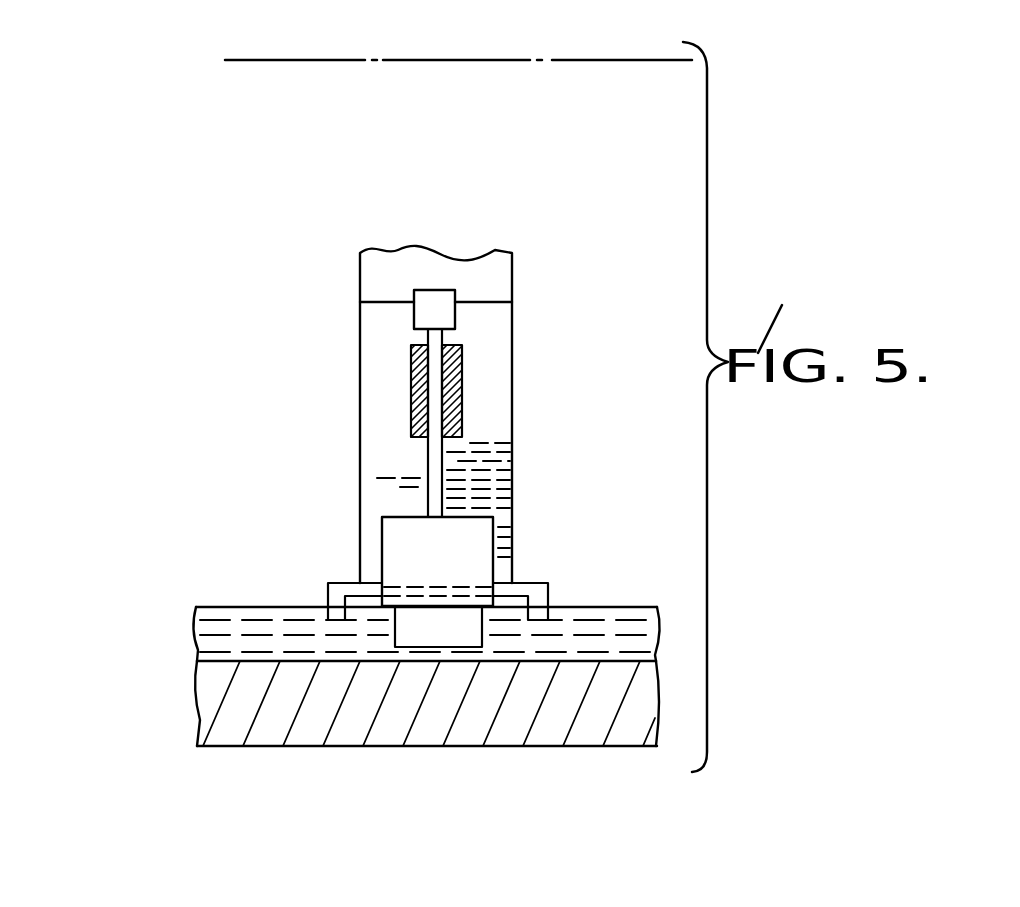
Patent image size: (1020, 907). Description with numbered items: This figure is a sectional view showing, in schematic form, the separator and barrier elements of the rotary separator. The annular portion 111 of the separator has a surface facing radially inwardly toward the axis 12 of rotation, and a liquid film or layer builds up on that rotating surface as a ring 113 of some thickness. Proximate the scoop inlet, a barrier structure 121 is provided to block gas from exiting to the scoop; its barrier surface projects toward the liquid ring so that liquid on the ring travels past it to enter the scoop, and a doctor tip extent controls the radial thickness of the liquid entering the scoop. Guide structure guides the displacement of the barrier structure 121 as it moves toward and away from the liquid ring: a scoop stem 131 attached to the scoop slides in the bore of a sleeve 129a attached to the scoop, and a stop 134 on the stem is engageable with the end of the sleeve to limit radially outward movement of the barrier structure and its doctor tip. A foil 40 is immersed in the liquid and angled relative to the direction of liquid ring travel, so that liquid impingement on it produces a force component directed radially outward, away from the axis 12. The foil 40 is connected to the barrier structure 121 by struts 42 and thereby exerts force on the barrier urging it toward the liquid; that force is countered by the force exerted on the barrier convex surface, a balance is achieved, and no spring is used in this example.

The axis 12 is at (477, 62).
The stop 134 is at (435, 298).
The sleeve 129a is at (462, 383).
The scoop stem 131 is at (428, 452).
The barrier structure 121 is at (382, 541).
The struts 42 is at (553, 593).
The foil 40 is at (537, 622).
The ring 113 is at (194, 633).
The annular portion 111 is at (268, 740).